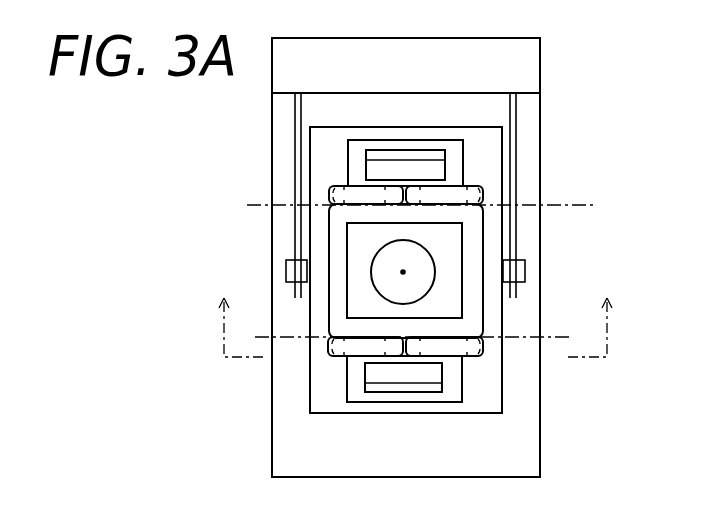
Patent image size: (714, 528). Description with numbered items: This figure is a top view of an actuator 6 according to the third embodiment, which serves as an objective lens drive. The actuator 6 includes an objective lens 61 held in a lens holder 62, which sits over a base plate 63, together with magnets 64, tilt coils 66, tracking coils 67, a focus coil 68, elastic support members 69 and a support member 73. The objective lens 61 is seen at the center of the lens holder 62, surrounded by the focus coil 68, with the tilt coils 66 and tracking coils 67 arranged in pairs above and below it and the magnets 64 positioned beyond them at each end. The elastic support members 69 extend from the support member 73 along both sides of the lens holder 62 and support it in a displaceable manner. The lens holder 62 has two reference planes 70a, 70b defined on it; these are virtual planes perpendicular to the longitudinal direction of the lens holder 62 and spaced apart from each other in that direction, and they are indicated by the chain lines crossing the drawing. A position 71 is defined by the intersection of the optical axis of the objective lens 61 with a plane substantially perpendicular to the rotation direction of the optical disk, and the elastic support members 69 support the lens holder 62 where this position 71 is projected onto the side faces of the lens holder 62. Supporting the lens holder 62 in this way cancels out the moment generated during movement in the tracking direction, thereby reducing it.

The actuator 6 is at (502, 26).
The objective lens 61 is at (416, 291).
The lens holder 62 is at (478, 408).
The base plate 63 is at (528, 448).
The magnets 64 is at (420, 168).
The tilt coils 66 is at (332, 186).
The tracking coils 67 is at (474, 186).
The focus coil 68 is at (473, 318).
The elastic support members 69 is at (298, 114).
The reference plane 70a is at (560, 336).
The reference plane 70b is at (575, 204).
The position 71 is at (401, 274).
The support member 73 is at (540, 53).